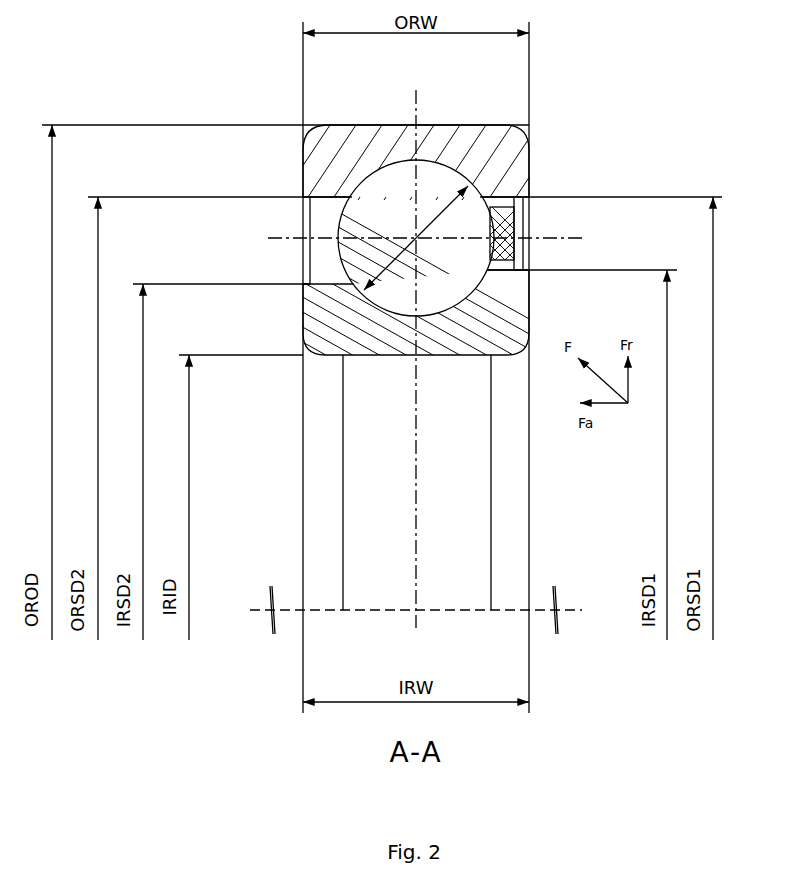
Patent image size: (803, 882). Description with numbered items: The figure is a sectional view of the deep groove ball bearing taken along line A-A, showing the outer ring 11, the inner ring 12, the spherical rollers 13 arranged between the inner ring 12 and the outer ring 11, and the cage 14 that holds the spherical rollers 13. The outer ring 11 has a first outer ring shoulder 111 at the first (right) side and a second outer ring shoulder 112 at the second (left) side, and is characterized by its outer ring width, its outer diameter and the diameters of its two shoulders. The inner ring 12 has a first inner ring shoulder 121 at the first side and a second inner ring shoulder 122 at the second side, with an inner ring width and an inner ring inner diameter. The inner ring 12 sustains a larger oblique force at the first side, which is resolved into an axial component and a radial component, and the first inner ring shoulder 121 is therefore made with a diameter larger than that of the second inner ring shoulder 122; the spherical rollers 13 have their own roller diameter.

The outer ring 11 is at (490, 137).
The first outer ring shoulder 111 is at (514, 193).
The second outer ring shoulder 112 is at (320, 192).
The inner ring 12 is at (331, 328).
The first inner ring shoulder 121 is at (514, 272).
The second inner ring shoulder 122 is at (308, 288).
The spherical rollers 13 is at (403, 300).
The cage 14 is at (514, 221).